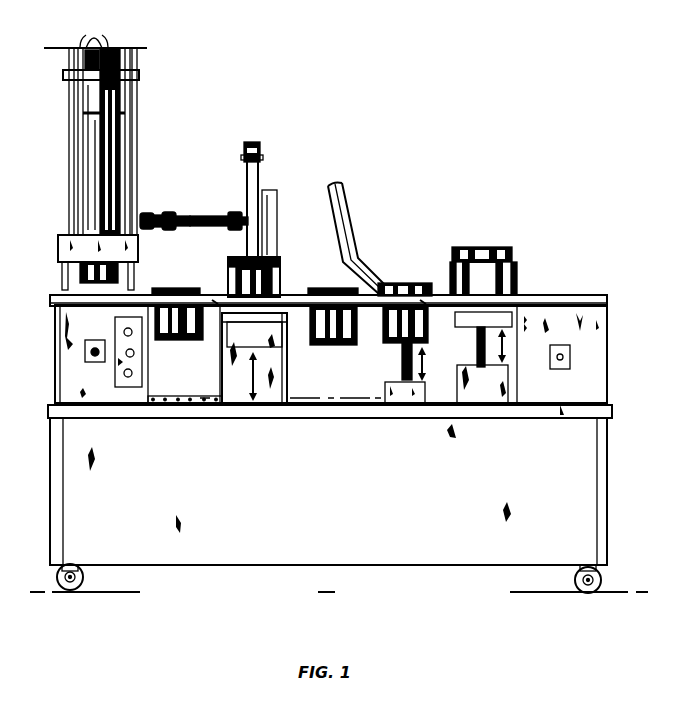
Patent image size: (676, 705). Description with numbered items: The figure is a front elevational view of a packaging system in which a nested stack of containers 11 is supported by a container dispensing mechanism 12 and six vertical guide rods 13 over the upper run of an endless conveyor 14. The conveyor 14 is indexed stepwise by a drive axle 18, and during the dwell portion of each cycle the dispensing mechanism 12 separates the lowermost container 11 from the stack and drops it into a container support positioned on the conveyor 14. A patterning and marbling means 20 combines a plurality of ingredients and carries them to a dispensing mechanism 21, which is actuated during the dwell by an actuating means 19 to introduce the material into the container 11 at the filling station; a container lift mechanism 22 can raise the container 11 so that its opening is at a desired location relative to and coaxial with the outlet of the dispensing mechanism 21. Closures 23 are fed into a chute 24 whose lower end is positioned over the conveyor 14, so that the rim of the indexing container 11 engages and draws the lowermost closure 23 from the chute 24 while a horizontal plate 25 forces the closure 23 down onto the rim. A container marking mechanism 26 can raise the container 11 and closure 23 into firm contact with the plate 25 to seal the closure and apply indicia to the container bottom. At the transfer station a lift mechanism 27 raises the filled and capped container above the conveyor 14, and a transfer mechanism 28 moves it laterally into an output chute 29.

The container 11 is at (90, 145).
The container dispensing mechanism 12 is at (58, 258).
The vertical guide rods 13 is at (94, 30).
The endless conveyor 14 is at (173, 396).
The drive axle 18 is at (95, 340).
The actuating means 19 is at (262, 151).
The patterning and marbling means 20 is at (187, 232).
The dispensing mechanism 21 is at (247, 200).
The container lift mechanism 22 is at (287, 372).
The closure 23 is at (482, 247).
The chute 24 is at (353, 214).
The horizontal plate 25 is at (400, 283).
The container marking mechanism 26 is at (400, 355).
The lift mechanism 27 is at (494, 396).
The transfer mechanism 28 is at (482, 278).
The output chute 29 is at (518, 272).